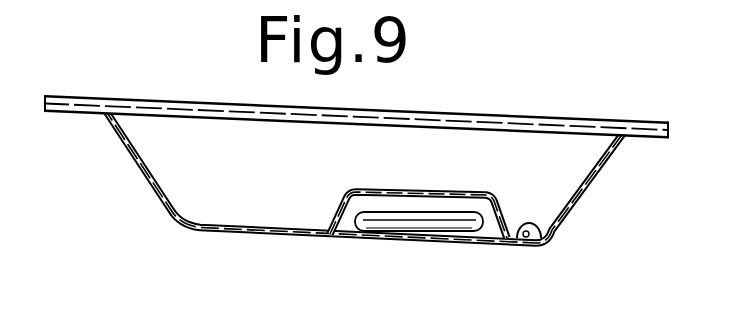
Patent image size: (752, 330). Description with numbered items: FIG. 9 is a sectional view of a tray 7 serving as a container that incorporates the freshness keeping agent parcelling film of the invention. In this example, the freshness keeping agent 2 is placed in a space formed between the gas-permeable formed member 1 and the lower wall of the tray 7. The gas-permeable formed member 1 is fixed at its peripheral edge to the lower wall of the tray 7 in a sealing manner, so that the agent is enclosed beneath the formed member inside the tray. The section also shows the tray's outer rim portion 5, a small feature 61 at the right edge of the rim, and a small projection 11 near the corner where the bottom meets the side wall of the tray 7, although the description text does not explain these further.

The gas-permeable formed member 1 is at (336, 213).
The freshness keeping agent 2 is at (446, 242).
The flange 5 is at (577, 120).
The flange edge 61 is at (653, 146).
The tray 7 is at (578, 203).
The projection 11 is at (543, 242).